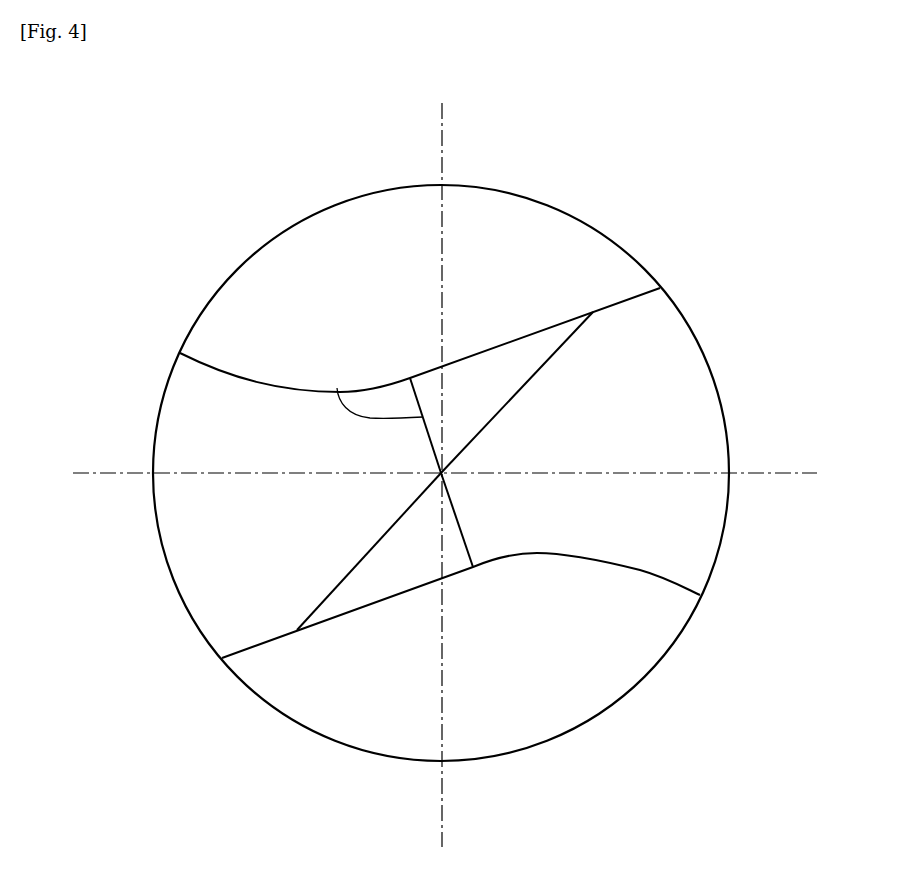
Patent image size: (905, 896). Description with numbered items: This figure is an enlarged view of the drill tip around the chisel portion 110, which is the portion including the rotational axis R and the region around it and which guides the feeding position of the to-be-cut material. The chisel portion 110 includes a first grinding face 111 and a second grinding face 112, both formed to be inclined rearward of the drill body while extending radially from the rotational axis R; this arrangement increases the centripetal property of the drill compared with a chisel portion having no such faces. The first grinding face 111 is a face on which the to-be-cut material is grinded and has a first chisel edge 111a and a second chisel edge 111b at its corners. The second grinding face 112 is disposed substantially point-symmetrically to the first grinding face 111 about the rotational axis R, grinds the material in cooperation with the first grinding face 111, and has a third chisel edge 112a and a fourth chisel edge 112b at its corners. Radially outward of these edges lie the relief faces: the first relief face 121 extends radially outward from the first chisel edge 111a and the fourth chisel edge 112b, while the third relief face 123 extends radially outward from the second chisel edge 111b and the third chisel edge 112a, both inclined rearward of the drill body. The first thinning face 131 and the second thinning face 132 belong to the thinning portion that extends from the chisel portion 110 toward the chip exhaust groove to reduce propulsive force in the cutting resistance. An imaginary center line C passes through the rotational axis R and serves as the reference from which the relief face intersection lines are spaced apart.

The chisel portion 110 is at (276, 428).
The first grinding face 111 is at (388, 573).
The first chisel edge 111a is at (353, 567).
The second chisel edge 111b is at (463, 528).
The second grinding face 112 is at (527, 350).
The third chisel edge 112a is at (563, 350).
The fourth chisel edge 112b is at (337, 390).
The first relief face 121 is at (207, 518).
The third relief face 123 is at (677, 428).
The first thinning face 131 is at (543, 705).
The second thinning face 132 is at (355, 230).
The rotational axis R is at (441, 473).
The imaginary center line C is at (790, 473).